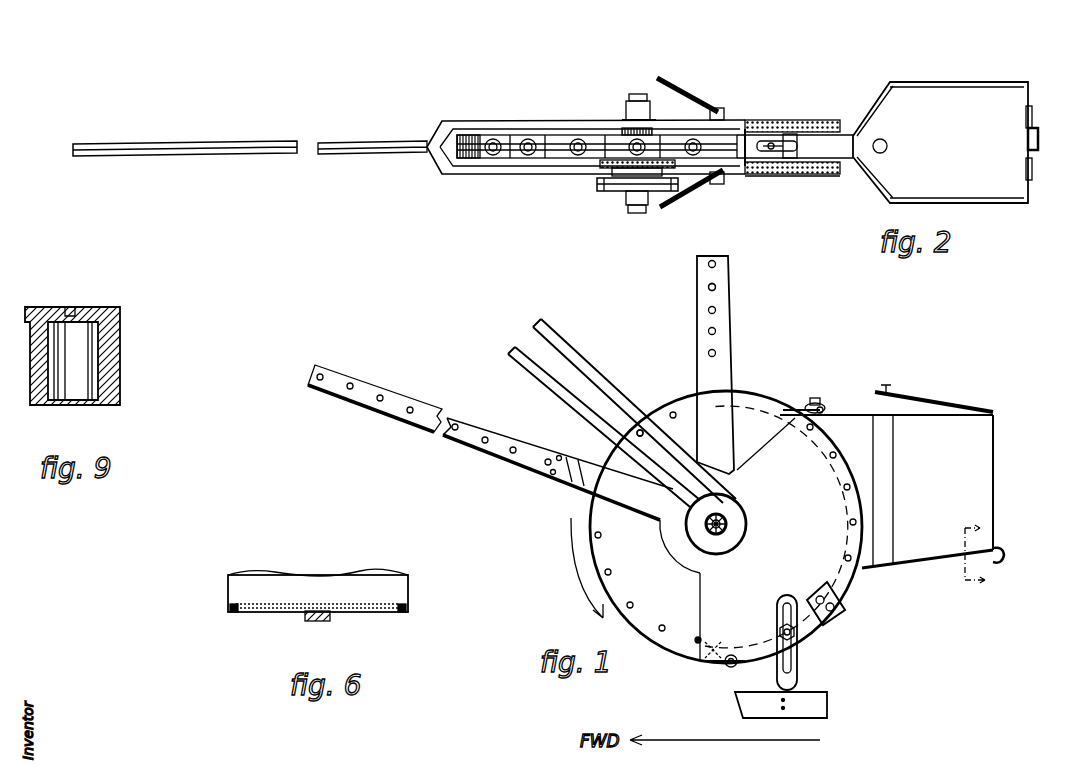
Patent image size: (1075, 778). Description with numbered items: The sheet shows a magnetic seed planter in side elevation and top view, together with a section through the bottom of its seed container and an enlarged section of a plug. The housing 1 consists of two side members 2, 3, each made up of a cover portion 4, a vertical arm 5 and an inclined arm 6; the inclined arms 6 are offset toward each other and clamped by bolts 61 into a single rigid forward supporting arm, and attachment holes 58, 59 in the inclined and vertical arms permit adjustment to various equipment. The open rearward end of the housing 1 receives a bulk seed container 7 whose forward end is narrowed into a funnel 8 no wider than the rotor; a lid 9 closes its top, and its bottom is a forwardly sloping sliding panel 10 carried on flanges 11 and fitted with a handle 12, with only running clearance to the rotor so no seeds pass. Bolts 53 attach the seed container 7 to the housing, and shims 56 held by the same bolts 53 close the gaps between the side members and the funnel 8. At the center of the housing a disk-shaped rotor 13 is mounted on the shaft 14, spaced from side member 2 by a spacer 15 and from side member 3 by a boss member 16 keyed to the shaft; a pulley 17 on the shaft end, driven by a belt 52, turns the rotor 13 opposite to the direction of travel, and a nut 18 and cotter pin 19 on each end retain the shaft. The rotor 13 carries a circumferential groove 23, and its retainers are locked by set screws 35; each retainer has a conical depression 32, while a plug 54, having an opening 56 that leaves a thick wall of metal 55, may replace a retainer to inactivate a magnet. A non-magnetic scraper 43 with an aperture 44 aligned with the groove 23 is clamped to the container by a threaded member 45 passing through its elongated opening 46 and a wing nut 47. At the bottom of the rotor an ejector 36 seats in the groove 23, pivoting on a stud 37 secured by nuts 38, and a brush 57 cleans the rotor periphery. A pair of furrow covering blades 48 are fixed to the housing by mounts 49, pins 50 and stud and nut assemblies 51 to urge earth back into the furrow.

In FIG. 1, the housing 1 is at (691, 662).
In FIG. 2, the side member 2 is at (556, 120).
In FIG. 2, the side member 3 is at (544, 168).
In FIG. 1, the side member 3 is at (770, 452).
In FIG. 1, the cover portion 4 is at (726, 527).
In FIG. 1, the vertical arm 5 is at (722, 368).
In FIG. 2, the inclined arm 6 is at (287, 152).
In FIG. 1, the inclined arm 6 is at (400, 402).
In FIG. 2, the bulk seed container 7 is at (973, 205).
In FIG. 1, the bulk seed container 7 is at (975, 460).
In FIG. 2, the funnel 8 is at (847, 138).
In FIG. 1, the funnel 8 is at (860, 428).
In FIG. 2, the lid 9 is at (1013, 105).
In FIG. 1, the lid 9 is at (918, 395).
In FIG. 6, the sliding panel 10 is at (378, 613).
In FIG. 6, the flange 11 is at (232, 613).
In FIG. 2, the handle 12 is at (1037, 130).
In FIG. 6, the handle 12 is at (312, 619).
In FIG. 1, the handle 12 is at (1000, 548).
In FIG. 2, the rotor 13 is at (514, 138).
In FIG. 1, the rotor 13 is at (688, 408).
In FIG. 2, the shaft 14 is at (642, 210).
In FIG. 1, the shaft 14 is at (727, 533).
In FIG. 2, the spacer 15 is at (632, 126).
In FIG. 2, the boss member 16 is at (612, 165).
In FIG. 2, the pulley 17 is at (625, 192).
In FIG. 2, the nut 18 is at (651, 108).
In FIG. 1, the nut 18 is at (722, 520).
In FIG. 2, the cotter pin 19 is at (630, 98).
In FIG. 1, the cotter pin 19 is at (706, 528).
In FIG. 2, the groove 23 is at (515, 138).
In FIG. 2, the frustro-conical shaped depression 32 is at (580, 162).
In FIG. 1, the set screw 35 is at (668, 407).
In FIG. 1, the ejector 36 is at (703, 668).
In FIG. 1, the stud 37 is at (727, 665).
In FIG. 1, the nut 38 is at (735, 664).
In FIG. 2, the scraper 43 is at (792, 137).
In FIG. 1, the scraper 43 is at (782, 417).
In FIG. 2, the aperture 44 is at (747, 127).
In FIG. 1, the threaded member 45 is at (809, 396).
In FIG. 2, the elongated opening 46 is at (778, 150).
In FIG. 2, the wing nut 47 is at (770, 149).
In FIG. 1, the wing nut 47 is at (821, 408).
In FIG. 2, the furrow covering blade 48 is at (692, 97).
In FIG. 1, the furrow covering blade 48 is at (818, 704).
In FIG. 1, the mount 49 is at (790, 681).
In FIG. 1, the pin 50 is at (790, 650).
In FIG. 1, the stud and nut assembly 51 is at (800, 632).
In FIG. 1, the belt 52 is at (565, 350).
In FIG. 2, the bolt 53 is at (802, 177).
In FIG. 1, the bolt 53 is at (863, 569).
In FIG. 9, the plug 54 is at (105, 345).
In FIG. 9, the wall of metal 55 is at (50, 315).
In FIG. 2, the shim 56 is at (823, 125).
In FIG. 9, the shim 56 is at (80, 385).
In FIG. 1, the brush 57 is at (838, 612).
In FIG. 1, the attachment hole 58 is at (456, 424).
In FIG. 1, the attachment hole 59 is at (716, 287).
In FIG. 2, the bolt 61 is at (413, 152).
In FIG. 1, the bolt 61 is at (538, 473).